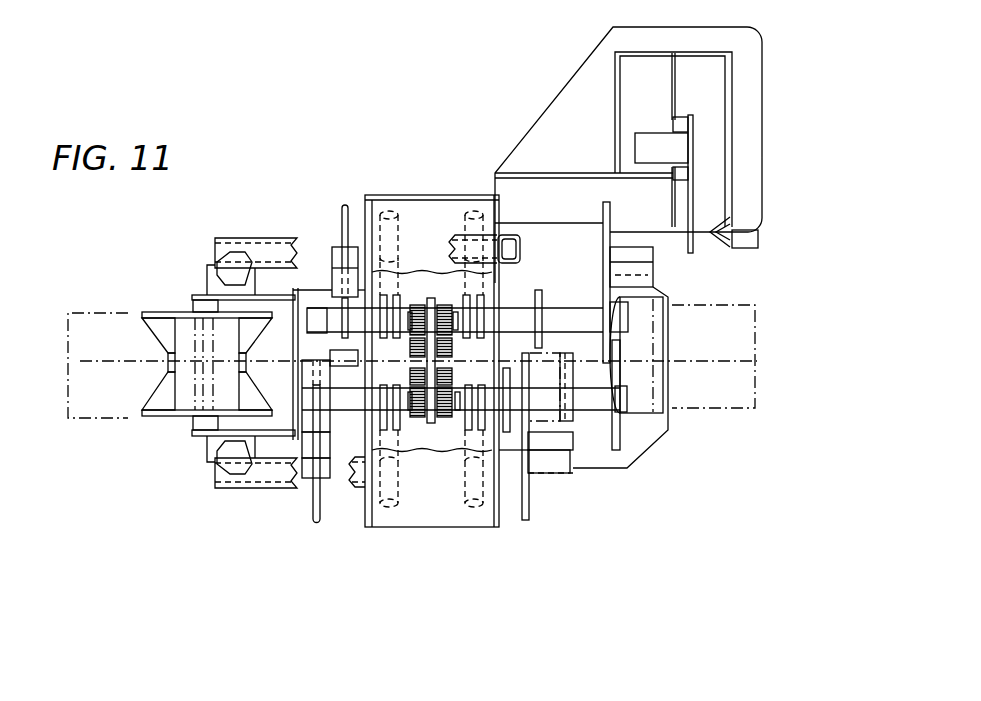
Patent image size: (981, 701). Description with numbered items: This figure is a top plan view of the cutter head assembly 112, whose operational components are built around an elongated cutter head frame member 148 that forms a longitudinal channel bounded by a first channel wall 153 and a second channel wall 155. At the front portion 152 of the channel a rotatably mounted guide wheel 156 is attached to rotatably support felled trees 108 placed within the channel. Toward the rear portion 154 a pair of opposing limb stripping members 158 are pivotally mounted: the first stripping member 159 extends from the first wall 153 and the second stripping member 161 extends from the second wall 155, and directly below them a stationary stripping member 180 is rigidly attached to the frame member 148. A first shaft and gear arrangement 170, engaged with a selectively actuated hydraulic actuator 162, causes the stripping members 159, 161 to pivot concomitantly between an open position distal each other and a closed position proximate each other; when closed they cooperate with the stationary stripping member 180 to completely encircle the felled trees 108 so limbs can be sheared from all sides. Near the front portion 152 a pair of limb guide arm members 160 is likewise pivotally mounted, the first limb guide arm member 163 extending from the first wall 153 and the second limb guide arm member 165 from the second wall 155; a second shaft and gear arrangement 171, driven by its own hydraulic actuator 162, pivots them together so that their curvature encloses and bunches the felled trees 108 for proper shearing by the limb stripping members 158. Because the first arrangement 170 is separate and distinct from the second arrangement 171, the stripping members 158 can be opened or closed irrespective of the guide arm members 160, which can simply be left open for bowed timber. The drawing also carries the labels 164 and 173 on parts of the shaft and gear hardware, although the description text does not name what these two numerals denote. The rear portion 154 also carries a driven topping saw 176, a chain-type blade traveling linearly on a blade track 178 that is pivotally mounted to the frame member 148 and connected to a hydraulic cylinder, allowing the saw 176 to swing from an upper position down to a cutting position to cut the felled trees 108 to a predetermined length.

The felled trees 108 is at (104, 413).
The cutter head assembly 112 is at (428, 490).
The cutter head frame member 148 is at (252, 242).
The front portion 152 is at (195, 287).
The first channel wall 153 is at (488, 450).
The rear portion 154 is at (687, 428).
The second channel wall 155 is at (490, 280).
The guide wheel 156 is at (160, 408).
The limb stripping members 158 is at (584, 484).
The first stripping member 159 is at (540, 468).
The limb guide arm members 160 is at (316, 534).
The second stripping member 161 is at (640, 277).
The hydraulic actuator 162 is at (390, 214).
The first limb guide arm member 163 is at (313, 503).
The shaft 164 is at (593, 402).
The second limb guide arm member 165 is at (342, 247).
The first shaft and gear arrangement 170 is at (455, 385).
The second shaft and gear arrangement 171 is at (568, 318).
The shaft 173 is at (452, 345).
The topping saw 176 is at (697, 197).
The blade track 178 is at (732, 107).
The stationary stripping member 180 is at (637, 388).